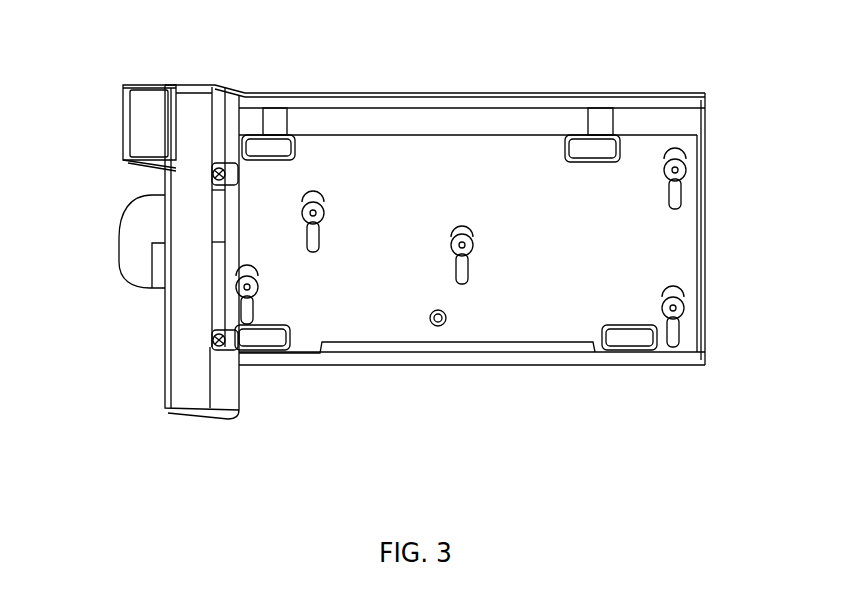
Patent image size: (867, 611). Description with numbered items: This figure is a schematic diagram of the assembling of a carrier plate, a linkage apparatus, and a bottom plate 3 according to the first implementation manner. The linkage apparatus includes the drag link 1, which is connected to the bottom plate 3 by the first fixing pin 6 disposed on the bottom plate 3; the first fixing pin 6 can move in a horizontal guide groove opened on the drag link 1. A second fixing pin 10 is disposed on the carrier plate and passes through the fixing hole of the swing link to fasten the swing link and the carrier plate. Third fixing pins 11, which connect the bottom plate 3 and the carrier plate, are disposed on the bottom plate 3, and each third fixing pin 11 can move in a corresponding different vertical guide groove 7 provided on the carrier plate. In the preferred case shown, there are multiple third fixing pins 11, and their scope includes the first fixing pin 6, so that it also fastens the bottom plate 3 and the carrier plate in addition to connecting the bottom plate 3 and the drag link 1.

The drag link 1 is at (136, 279).
The bottom plate 3 is at (470, 187).
The first fixing pin 6 is at (387, 131).
The vertical guide groove 7 is at (540, 147).
The second fixing pin 10 is at (363, 394).
The third fixing pin 11 is at (511, 244).